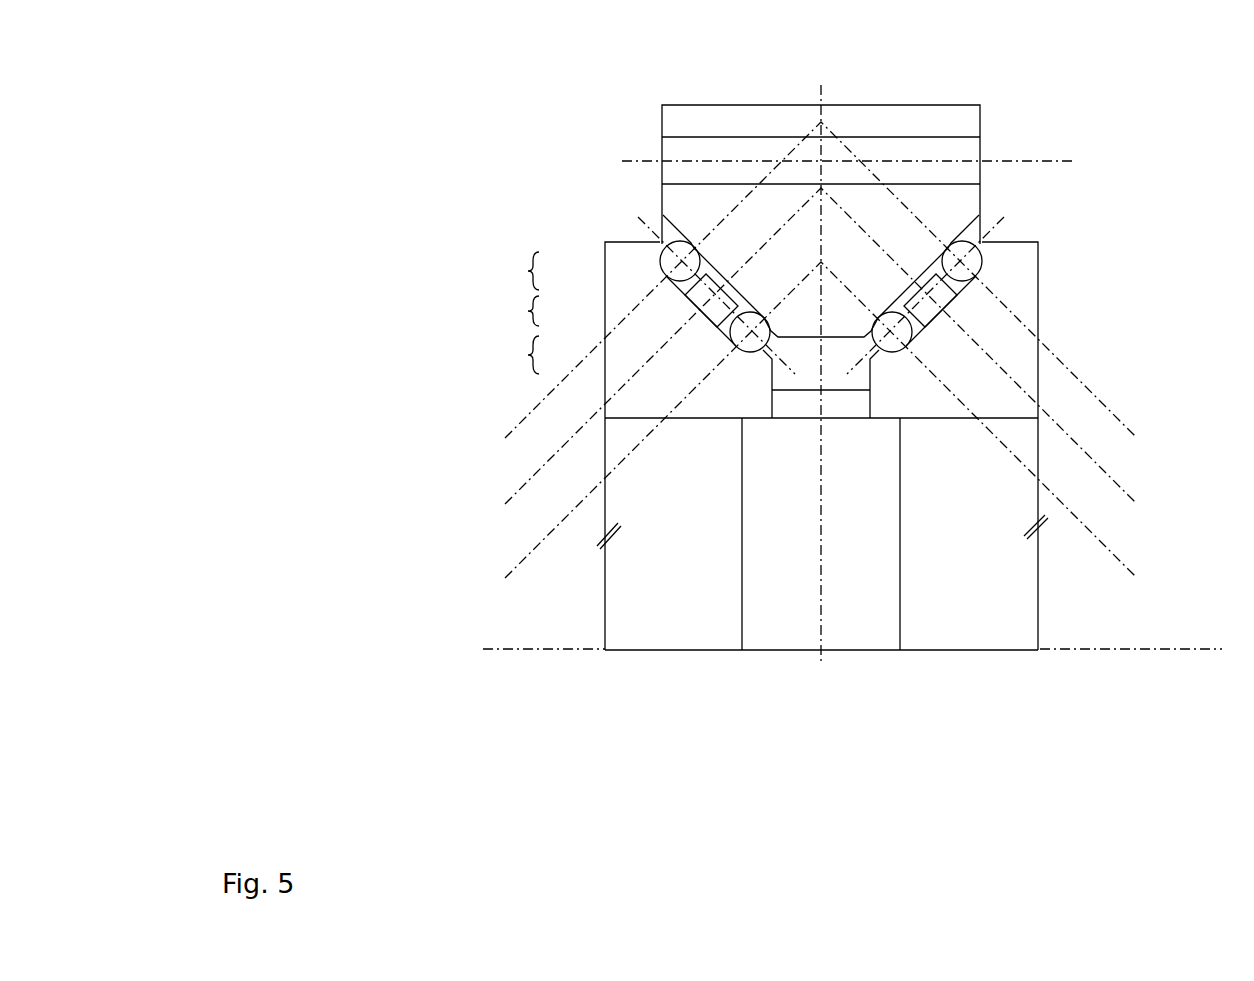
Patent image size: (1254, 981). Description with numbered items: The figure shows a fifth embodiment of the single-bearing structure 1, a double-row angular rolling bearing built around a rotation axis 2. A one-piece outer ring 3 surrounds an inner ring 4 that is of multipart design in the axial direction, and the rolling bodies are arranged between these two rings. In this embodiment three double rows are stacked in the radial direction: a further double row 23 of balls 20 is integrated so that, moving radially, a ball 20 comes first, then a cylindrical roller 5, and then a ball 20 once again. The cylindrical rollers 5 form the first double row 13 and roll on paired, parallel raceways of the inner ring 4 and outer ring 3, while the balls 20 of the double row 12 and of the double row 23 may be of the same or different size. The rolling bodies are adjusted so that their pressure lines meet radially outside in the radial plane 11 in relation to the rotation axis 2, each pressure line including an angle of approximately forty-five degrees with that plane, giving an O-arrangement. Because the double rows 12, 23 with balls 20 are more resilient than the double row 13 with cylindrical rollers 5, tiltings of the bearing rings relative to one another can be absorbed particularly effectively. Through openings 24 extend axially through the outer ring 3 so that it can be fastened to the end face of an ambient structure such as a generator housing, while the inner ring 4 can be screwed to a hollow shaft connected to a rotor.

The single-bearing structure 1 is at (1066, 105).
The rotation axis 2 is at (1173, 646).
The outer ring 3 is at (937, 125).
The inner ring 4 is at (1017, 342).
The cylindrical rollers 5 is at (700, 306).
The radial plane 11 is at (822, 96).
The further double row 12 is at (518, 271).
The first double row 13 is at (518, 311).
The balls 20 is at (667, 262).
The further double row 23 is at (518, 355).
The through openings 24 is at (665, 155).